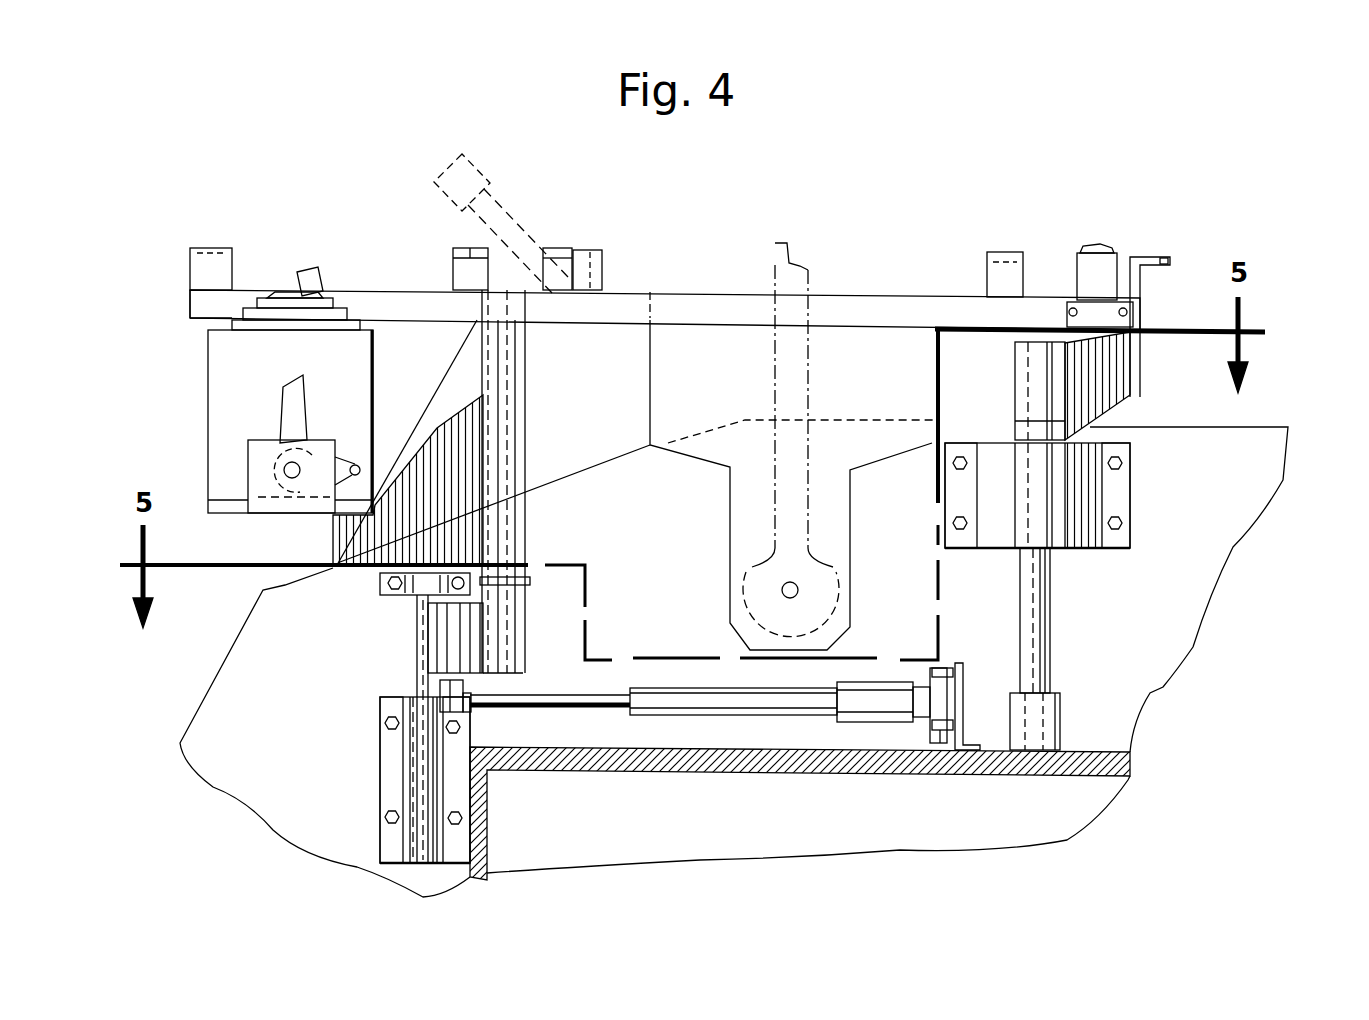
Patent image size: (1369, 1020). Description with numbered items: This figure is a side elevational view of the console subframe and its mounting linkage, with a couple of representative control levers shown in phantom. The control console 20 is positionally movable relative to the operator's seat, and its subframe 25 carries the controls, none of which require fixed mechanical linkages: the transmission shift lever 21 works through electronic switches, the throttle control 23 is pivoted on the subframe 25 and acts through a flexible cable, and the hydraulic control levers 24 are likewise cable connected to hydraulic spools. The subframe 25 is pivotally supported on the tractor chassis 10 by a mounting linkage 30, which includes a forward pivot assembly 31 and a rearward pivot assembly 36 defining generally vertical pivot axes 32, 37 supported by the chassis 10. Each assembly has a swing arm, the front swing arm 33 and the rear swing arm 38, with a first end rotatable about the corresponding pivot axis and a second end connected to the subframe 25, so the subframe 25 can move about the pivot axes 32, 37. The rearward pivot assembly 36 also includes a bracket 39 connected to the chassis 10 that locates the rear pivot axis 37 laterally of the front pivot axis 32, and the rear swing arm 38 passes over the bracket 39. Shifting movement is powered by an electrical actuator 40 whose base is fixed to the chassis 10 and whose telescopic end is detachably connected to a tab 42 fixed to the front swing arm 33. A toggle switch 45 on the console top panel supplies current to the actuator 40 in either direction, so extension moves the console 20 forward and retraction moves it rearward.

The tractor chassis 10 is at (1163, 688).
The control console 20 is at (940, 178).
The transmission shift lever 21 is at (297, 270).
The throttle control 23 is at (290, 413).
The hydraulic control levers 24 is at (462, 154).
The subframe 25 is at (223, 300).
The mounting linkage 30 is at (1270, 364).
The forward pivot assembly 31 is at (362, 613).
The front pivot axis 32 is at (525, 417).
The front swing arm 33 is at (440, 385).
The rearward pivot assembly 36 is at (1208, 498).
The rear pivot axis 37 is at (1040, 627).
The rear swing arm 38 is at (1117, 407).
The bracket 39 is at (1082, 555).
The electrical actuator 40 is at (723, 693).
The tab 42 is at (417, 647).
The toggle switch 45 is at (1100, 247).